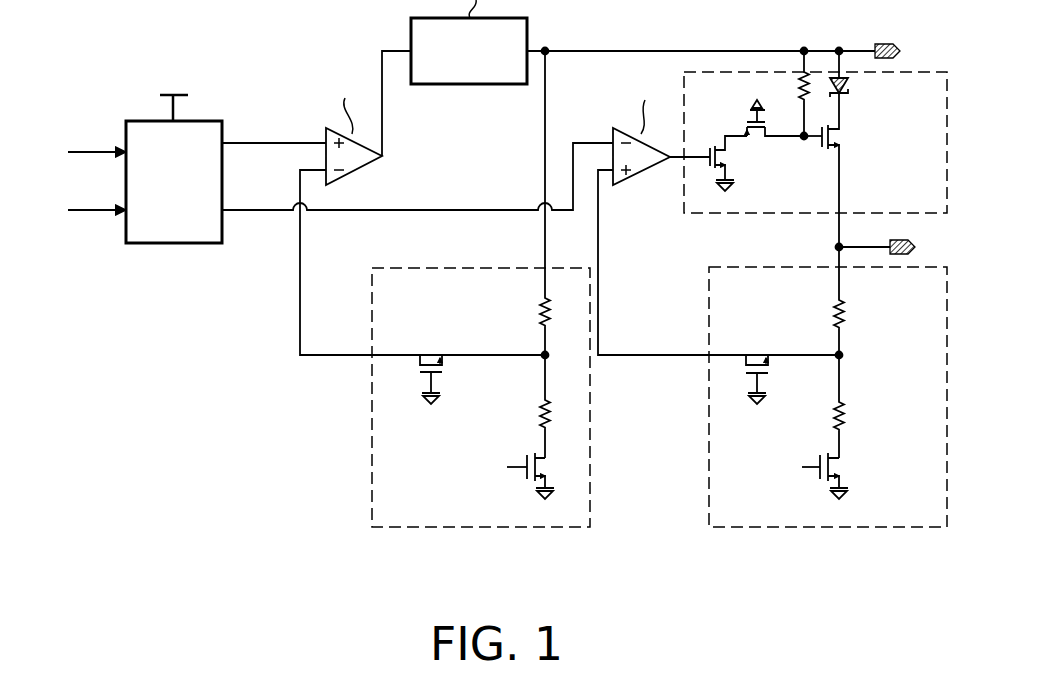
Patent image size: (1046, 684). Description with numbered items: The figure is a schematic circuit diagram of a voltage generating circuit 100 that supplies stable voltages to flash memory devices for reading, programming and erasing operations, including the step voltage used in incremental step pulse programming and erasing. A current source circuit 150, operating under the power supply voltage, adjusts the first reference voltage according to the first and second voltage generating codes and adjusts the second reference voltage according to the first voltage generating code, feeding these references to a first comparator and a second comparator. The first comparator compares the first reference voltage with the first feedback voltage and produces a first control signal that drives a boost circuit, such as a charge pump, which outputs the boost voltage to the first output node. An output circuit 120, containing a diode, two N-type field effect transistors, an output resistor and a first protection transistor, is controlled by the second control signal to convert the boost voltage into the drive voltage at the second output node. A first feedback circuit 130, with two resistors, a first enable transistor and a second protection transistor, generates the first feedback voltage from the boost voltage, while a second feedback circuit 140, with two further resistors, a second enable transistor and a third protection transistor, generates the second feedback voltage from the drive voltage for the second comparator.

The voltage generating circuit 100 is at (941, 587).
The output circuit 120 is at (731, 214).
The first feedback circuit 130 is at (461, 268).
The second feedback circuit 140 is at (709, 311).
The current source circuit 150 is at (205, 121).